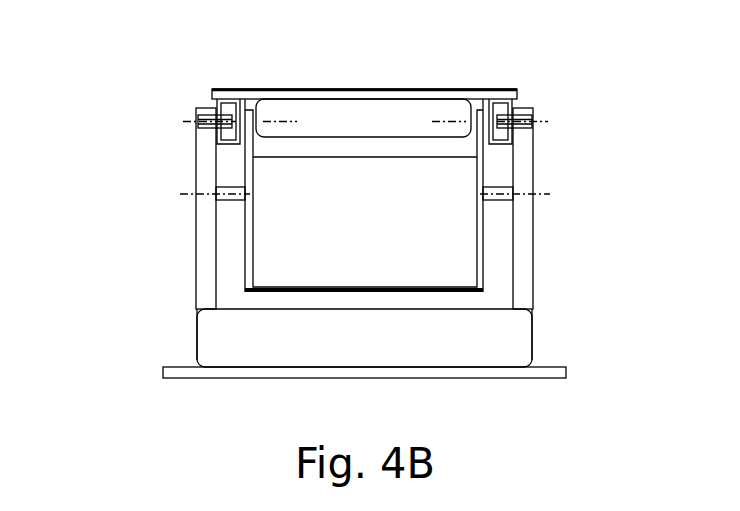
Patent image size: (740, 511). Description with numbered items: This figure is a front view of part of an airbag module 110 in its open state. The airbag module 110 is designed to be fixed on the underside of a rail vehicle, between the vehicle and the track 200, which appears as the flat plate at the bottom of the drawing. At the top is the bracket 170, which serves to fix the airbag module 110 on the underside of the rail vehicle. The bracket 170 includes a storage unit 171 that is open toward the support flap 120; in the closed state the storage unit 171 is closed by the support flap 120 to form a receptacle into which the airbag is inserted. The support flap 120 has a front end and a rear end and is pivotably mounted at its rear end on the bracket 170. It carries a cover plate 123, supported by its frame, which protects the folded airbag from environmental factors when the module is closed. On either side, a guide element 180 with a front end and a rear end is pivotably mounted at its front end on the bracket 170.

The airbag module 110 is at (233, 80).
The bracket 170 is at (285, 83).
The storage unit 171 is at (397, 125).
The support flap 120 is at (487, 241).
The cover plate 123 is at (381, 292).
The guide element 180 is at (197, 252).
The track 200 is at (162, 373).